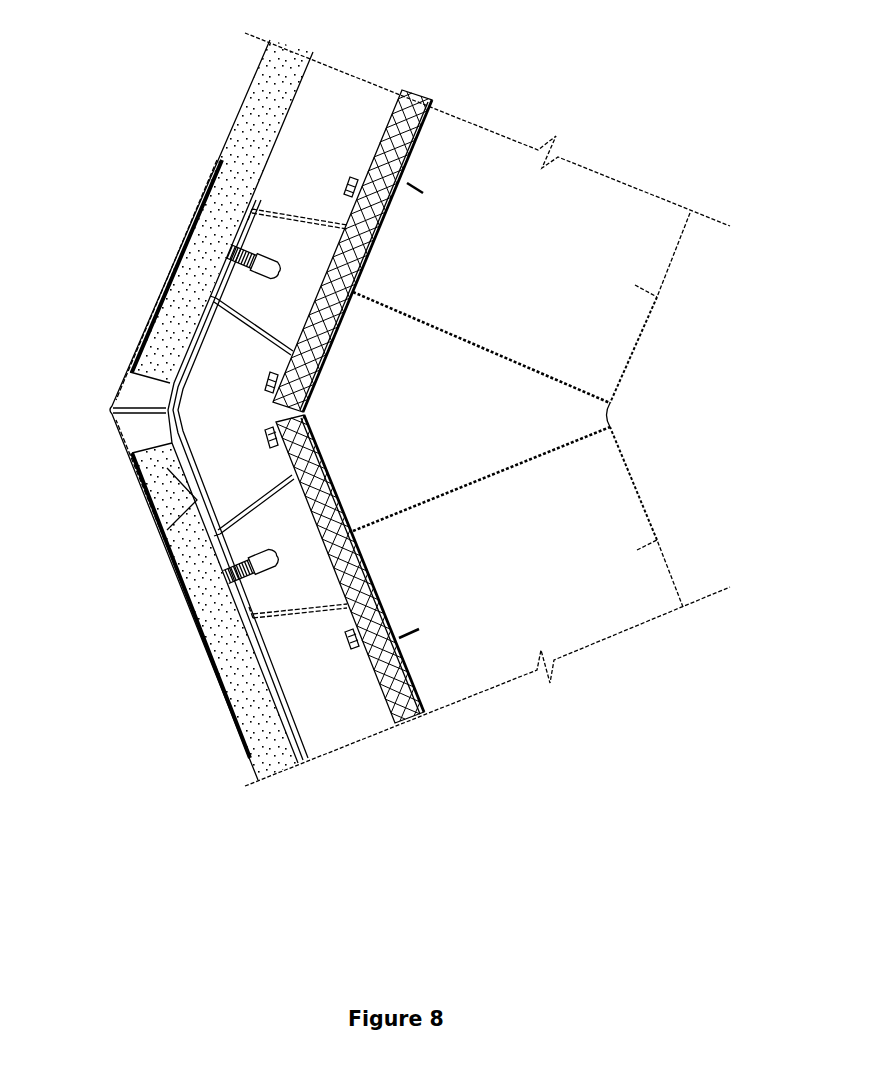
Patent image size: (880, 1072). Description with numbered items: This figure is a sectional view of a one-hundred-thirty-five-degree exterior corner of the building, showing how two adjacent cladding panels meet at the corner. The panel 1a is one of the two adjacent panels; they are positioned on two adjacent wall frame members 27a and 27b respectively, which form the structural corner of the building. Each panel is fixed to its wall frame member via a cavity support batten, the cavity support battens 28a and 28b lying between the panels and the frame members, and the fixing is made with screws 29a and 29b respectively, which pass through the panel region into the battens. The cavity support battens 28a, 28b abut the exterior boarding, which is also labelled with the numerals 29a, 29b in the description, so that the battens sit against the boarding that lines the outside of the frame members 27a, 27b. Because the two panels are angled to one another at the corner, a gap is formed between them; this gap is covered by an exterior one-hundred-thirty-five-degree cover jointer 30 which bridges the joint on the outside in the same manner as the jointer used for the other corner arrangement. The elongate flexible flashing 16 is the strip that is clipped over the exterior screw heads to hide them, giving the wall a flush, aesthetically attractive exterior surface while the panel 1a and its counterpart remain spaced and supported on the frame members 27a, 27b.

The panel 1a is at (252, 83).
The elongate flexible flashing 16 is at (165, 680).
The wall frame member 27a is at (447, 215).
The wall frame member 27b is at (467, 666).
The cavity support batten 28a is at (213, 352).
The cavity support batten 28b is at (295, 617).
The screw 29a is at (231, 251).
The screw 29b is at (420, 102).
The exterior 135° cover jointer 30 is at (197, 500).